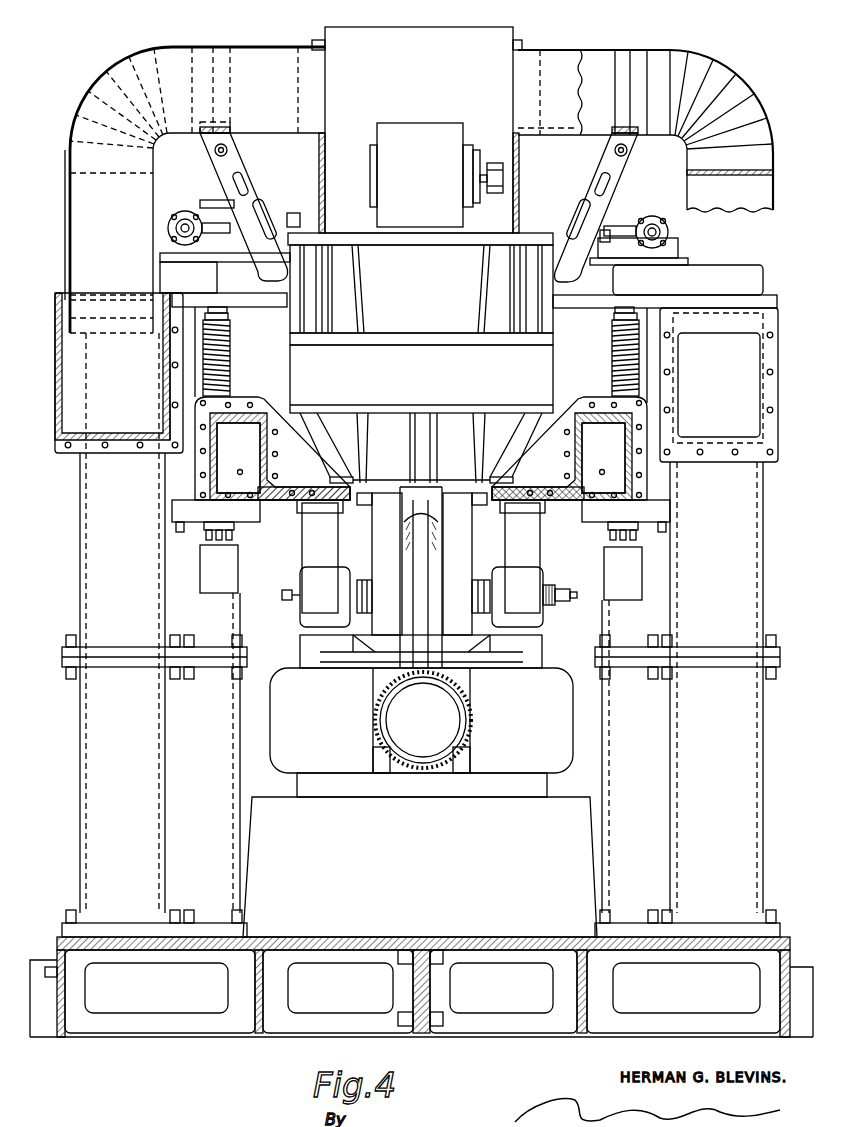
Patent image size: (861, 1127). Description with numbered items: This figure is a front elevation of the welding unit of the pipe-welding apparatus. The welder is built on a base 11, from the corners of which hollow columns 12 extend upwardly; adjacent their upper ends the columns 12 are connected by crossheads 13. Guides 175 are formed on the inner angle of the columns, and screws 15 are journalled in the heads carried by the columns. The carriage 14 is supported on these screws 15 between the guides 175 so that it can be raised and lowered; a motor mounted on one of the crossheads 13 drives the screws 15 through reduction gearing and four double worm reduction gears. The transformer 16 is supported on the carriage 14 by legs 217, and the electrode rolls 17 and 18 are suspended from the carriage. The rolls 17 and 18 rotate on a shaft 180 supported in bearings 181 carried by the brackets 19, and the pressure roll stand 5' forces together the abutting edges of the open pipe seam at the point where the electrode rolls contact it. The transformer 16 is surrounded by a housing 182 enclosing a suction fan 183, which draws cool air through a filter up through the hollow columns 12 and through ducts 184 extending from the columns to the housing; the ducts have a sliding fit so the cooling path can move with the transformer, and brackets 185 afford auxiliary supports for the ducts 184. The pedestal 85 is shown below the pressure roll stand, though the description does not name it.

The base 11 is at (620, 1022).
The columns 12 is at (748, 745).
The crossheads 13 is at (760, 405).
The carriage 14 is at (560, 420).
The screws 15 is at (230, 351).
The transformer 16 is at (547, 360).
The electrode roll 17 is at (430, 562).
The electrode roll 18 is at (410, 562).
The brackets 19 is at (523, 552).
The pressure roll stand 5' is at (424, 712).
The pedestal 85 is at (420, 867).
The guides 175 is at (222, 563).
The shaft 180 is at (547, 592).
The bearings 181 is at (528, 580).
The housing 182 is at (347, 152).
The suction fan 183 is at (423, 143).
The ducts 184 is at (181, 62).
The brackets 185 is at (225, 170).
The legs 217 is at (368, 464).